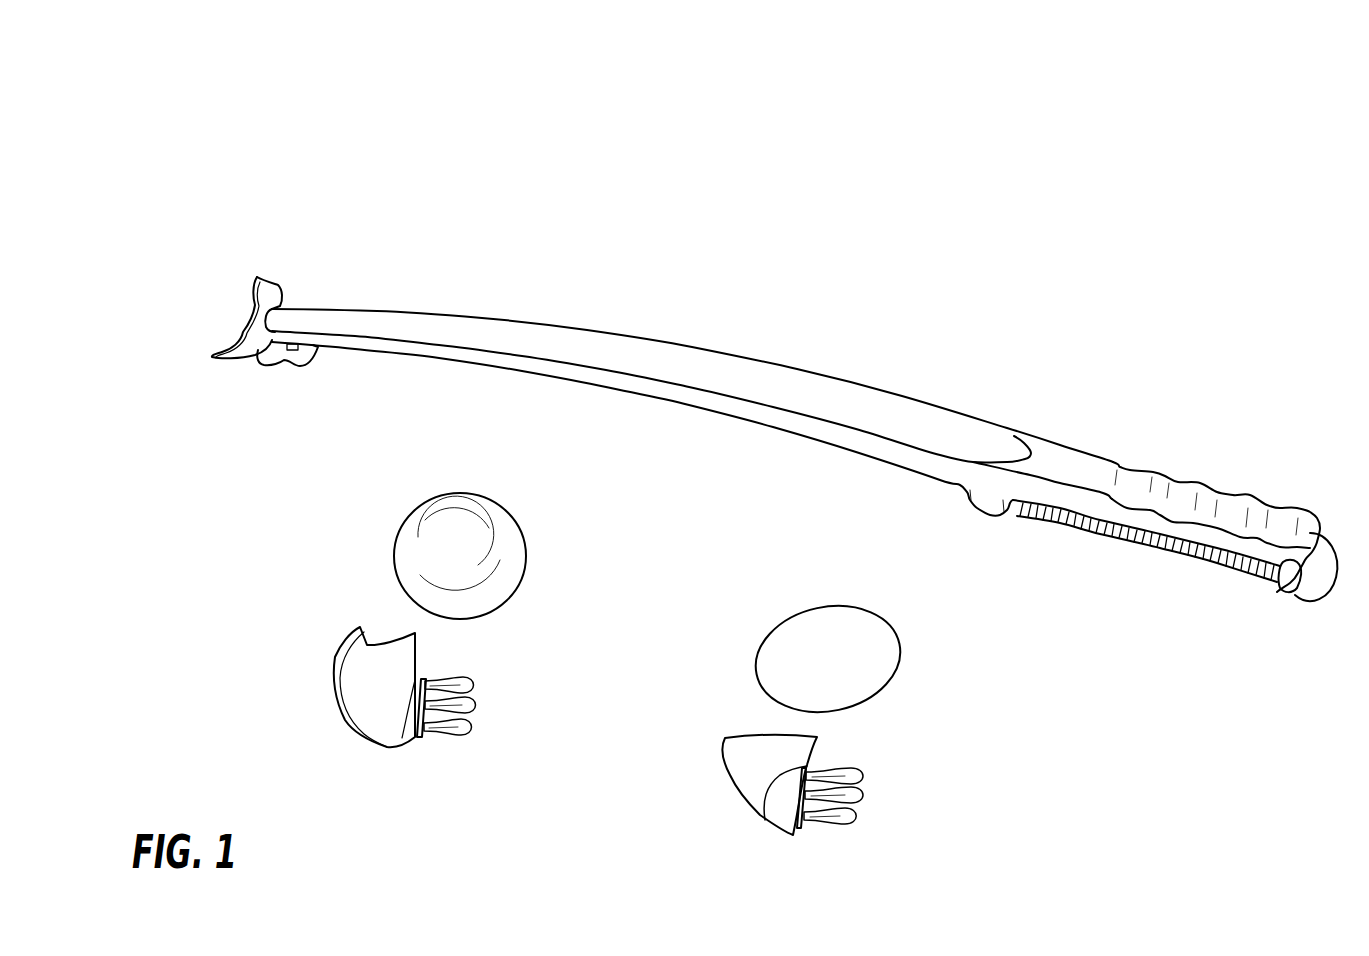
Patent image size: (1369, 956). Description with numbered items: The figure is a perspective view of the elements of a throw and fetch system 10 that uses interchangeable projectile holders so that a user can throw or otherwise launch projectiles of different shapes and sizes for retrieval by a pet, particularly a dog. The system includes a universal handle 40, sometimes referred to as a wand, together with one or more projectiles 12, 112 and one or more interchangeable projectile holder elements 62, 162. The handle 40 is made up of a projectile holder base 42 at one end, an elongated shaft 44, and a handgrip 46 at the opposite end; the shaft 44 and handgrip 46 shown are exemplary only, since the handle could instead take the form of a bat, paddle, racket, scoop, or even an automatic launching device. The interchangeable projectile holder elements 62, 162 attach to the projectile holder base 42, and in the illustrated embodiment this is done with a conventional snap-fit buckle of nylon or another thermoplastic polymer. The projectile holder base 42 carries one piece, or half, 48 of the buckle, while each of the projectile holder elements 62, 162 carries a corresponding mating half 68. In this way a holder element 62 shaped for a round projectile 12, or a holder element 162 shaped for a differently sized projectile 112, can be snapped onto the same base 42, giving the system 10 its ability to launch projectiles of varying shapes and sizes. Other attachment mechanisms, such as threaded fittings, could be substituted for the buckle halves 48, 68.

The throw and fetch system 10 is at (298, 70).
The universal handle 40 is at (562, 272).
The projectile holder base 42 is at (263, 275).
The shaft 44 is at (808, 393).
The handgrip 46 is at (1277, 517).
The piece (half) of a snap-fit buckle 48 is at (302, 353).
The projectile 12 is at (403, 572).
The interchangeable projectile holder element 62 is at (352, 678).
The piece (half) of a snap-fit buckle 68 is at (452, 731).
The projectile 112 is at (872, 658).
The interchangeable projectile holder element 162 is at (763, 777).